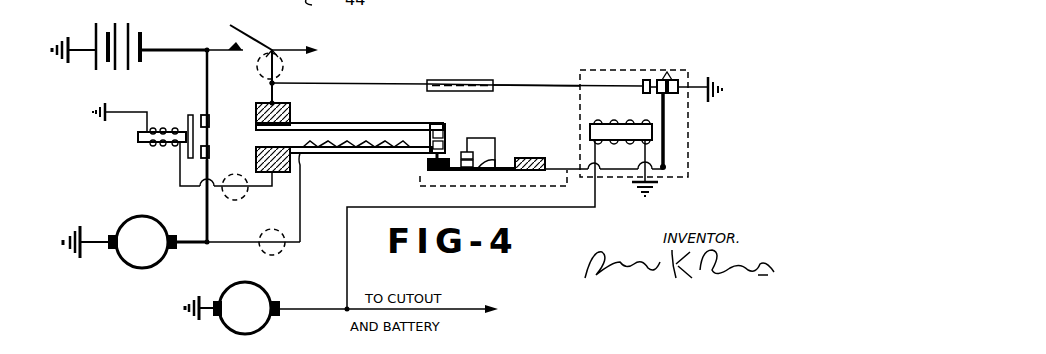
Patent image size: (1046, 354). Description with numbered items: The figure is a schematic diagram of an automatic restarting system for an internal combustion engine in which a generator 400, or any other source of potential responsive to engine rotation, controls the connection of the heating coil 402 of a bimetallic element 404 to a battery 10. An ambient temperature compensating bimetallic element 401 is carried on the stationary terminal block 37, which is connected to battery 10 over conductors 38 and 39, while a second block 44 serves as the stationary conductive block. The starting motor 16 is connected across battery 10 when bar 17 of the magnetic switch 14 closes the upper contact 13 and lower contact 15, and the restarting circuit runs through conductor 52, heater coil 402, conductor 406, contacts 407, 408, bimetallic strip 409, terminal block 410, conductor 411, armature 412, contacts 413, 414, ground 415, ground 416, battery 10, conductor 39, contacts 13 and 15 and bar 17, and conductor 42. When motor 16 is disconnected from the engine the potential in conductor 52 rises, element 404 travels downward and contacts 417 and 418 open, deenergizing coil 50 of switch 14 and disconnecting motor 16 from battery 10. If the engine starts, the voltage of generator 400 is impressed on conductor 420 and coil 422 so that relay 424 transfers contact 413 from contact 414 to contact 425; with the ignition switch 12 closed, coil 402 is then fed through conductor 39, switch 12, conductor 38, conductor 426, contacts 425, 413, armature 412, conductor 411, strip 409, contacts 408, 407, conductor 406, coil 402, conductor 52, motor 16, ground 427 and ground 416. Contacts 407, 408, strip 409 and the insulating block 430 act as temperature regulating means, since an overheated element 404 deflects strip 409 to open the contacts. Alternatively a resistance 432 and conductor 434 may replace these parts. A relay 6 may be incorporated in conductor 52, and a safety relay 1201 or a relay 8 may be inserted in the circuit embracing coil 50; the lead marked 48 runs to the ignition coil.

The ground 416 is at (58, 33).
The battery 10 is at (119, 5).
The conductor 39 is at (218, 50).
The ignition switch 12 is at (244, 33).
The lead to ignition coil 48 is at (290, 50).
The safety relay 1201 is at (283, 65).
The conductor 38 is at (270, 84).
The stationary terminal block 37 is at (283, 106).
The ambient temperature compensating bimetallic element 401 is at (377, 122).
The contact 417 is at (446, 134).
The contact 418 is at (450, 143).
The stationary conductive block 44 is at (275, 172).
The bimetallic element 404 is at (345, 157).
The heating coil 402 is at (374, 157).
The relay 8 is at (252, 198).
The magnetic switch 14 is at (155, 155).
The coil 50 is at (163, 132).
The contactor 17 is at (193, 135).
The upper contact 13 is at (209, 119).
The lower contact 15 is at (209, 151).
The conductor 42 is at (206, 222).
The ground 427 is at (75, 256).
The starting motor 16 is at (152, 251).
The conductor 52 is at (225, 242).
The relay 6 is at (258, 252).
The generator 400 is at (259, 316).
The conductor 420 is at (534, 208).
The insulating block 430 is at (428, 170).
The bimetallic strip 409 is at (443, 173).
The contact 408 is at (472, 171).
The contact 407 is at (478, 138).
The conductor 406 is at (497, 155).
The terminal block 410 is at (538, 158).
The conductor 434 is at (565, 187).
The resistance 432 is at (470, 80).
The conductor 426 is at (556, 84).
The relay 424 is at (621, 65).
The contact 425 is at (643, 82).
The contact 413 is at (667, 72).
The contact 414 is at (672, 75).
The ground 415 is at (713, 93).
The armature 412 is at (666, 132).
The coil 422 is at (600, 124).
The conductor 411 is at (606, 141).